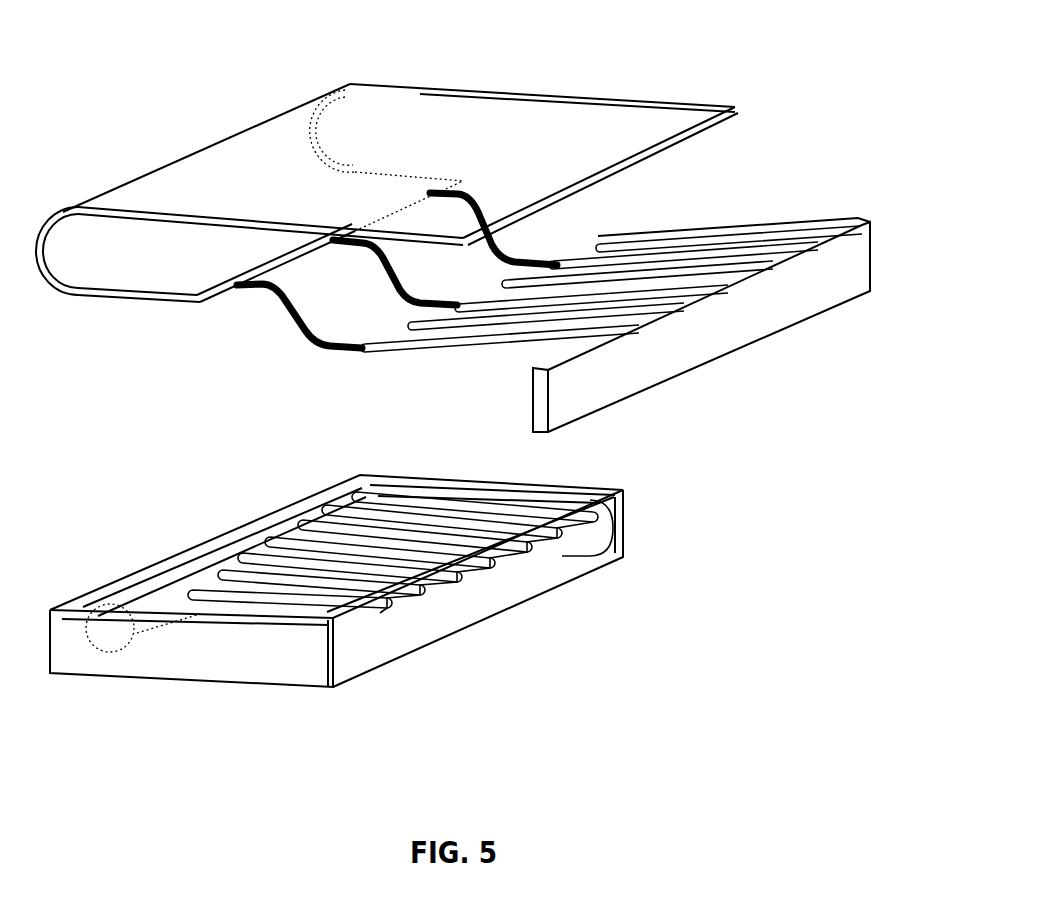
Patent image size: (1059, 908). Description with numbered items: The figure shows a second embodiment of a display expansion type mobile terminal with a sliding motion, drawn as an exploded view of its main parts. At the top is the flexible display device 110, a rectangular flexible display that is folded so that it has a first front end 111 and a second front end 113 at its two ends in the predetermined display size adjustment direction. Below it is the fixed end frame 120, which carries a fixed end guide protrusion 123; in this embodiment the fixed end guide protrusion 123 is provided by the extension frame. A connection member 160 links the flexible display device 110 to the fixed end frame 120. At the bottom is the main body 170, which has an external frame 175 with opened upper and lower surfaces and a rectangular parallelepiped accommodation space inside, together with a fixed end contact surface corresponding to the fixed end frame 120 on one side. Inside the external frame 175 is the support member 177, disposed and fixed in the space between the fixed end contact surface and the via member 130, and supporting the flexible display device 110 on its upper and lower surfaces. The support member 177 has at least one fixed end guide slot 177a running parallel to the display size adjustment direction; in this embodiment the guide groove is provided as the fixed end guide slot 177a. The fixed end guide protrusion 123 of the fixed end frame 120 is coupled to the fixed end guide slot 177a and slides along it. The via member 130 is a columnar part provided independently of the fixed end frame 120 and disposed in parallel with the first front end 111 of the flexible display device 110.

The flexible display device 110 is at (442, 230).
The first front end 111 is at (722, 128).
The second front end 113 is at (212, 305).
The connection member 160 is at (490, 232).
The fixed end frame 120 is at (619, 337).
The fixed end guide protrusion 123 is at (667, 320).
The main body 170 is at (383, 590).
The external frame 175 is at (580, 483).
The support member 177 is at (567, 553).
The fixed end guide slot 177a is at (470, 567).
The via member 130 is at (140, 637).